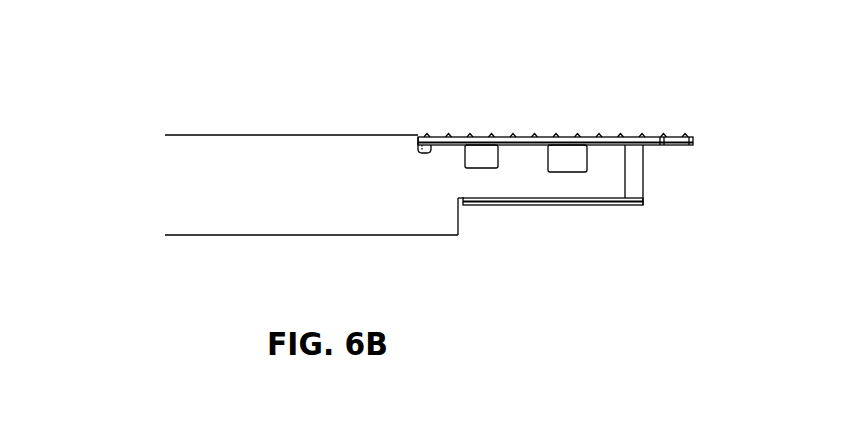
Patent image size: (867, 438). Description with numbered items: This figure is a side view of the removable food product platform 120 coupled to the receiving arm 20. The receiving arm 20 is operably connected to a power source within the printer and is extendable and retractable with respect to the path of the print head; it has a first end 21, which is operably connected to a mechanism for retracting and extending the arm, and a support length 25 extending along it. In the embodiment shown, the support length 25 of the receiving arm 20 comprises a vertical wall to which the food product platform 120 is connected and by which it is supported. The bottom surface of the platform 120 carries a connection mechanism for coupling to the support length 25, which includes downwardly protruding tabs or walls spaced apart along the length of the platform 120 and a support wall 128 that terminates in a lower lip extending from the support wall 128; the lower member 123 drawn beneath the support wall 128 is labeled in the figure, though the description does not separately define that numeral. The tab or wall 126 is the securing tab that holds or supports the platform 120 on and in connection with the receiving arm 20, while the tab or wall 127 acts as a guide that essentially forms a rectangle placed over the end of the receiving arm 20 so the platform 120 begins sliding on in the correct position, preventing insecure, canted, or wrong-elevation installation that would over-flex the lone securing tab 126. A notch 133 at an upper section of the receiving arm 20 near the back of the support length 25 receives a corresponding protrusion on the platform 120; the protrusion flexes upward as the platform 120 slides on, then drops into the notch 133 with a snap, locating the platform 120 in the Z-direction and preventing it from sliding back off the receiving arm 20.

The receiving arm 20 is at (231, 265).
The first end 21 is at (224, 173).
The support length 25 is at (567, 235).
The food product platform 120 is at (640, 112).
The lower plate 123 is at (613, 205).
The tab or wall 126 is at (570, 155).
The guide tab or wall 127 is at (483, 152).
The support wall 128 is at (633, 172).
The notch 133 is at (403, 145).